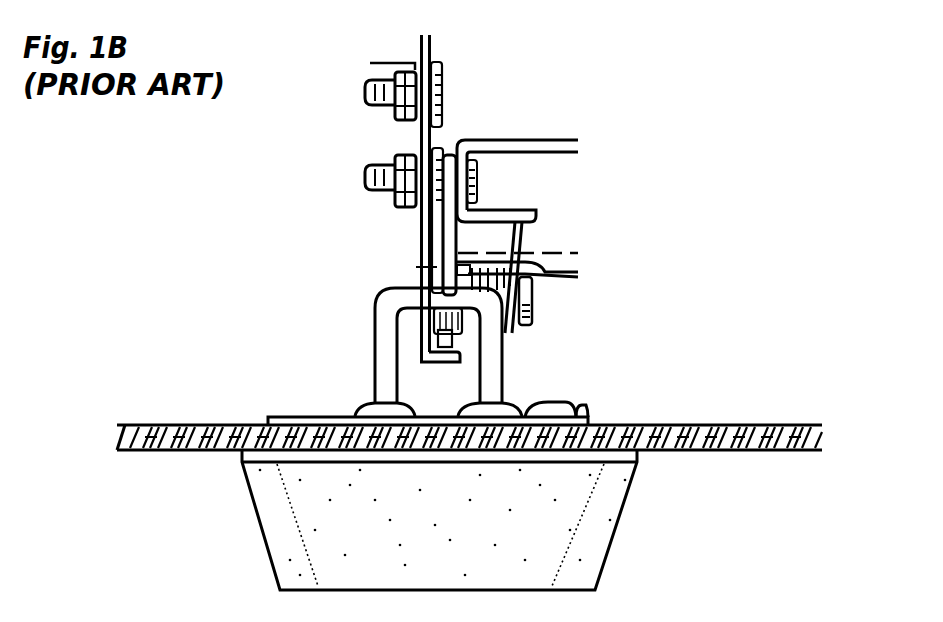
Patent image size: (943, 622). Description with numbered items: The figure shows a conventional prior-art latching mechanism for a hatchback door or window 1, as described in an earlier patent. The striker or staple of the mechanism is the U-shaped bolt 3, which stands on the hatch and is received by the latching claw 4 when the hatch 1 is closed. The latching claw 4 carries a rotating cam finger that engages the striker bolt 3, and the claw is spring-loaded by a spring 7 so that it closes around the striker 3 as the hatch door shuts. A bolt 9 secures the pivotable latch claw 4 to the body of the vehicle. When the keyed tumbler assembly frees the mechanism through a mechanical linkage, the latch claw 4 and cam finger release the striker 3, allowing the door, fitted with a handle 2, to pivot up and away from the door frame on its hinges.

The hatchback door or window 1 is at (190, 414).
The handle 2 is at (606, 566).
The U-shaped bolt (striker) 3 is at (364, 333).
The latching claw 4 is at (418, 267).
The spring 7 is at (518, 341).
The bolt 9 is at (352, 170).